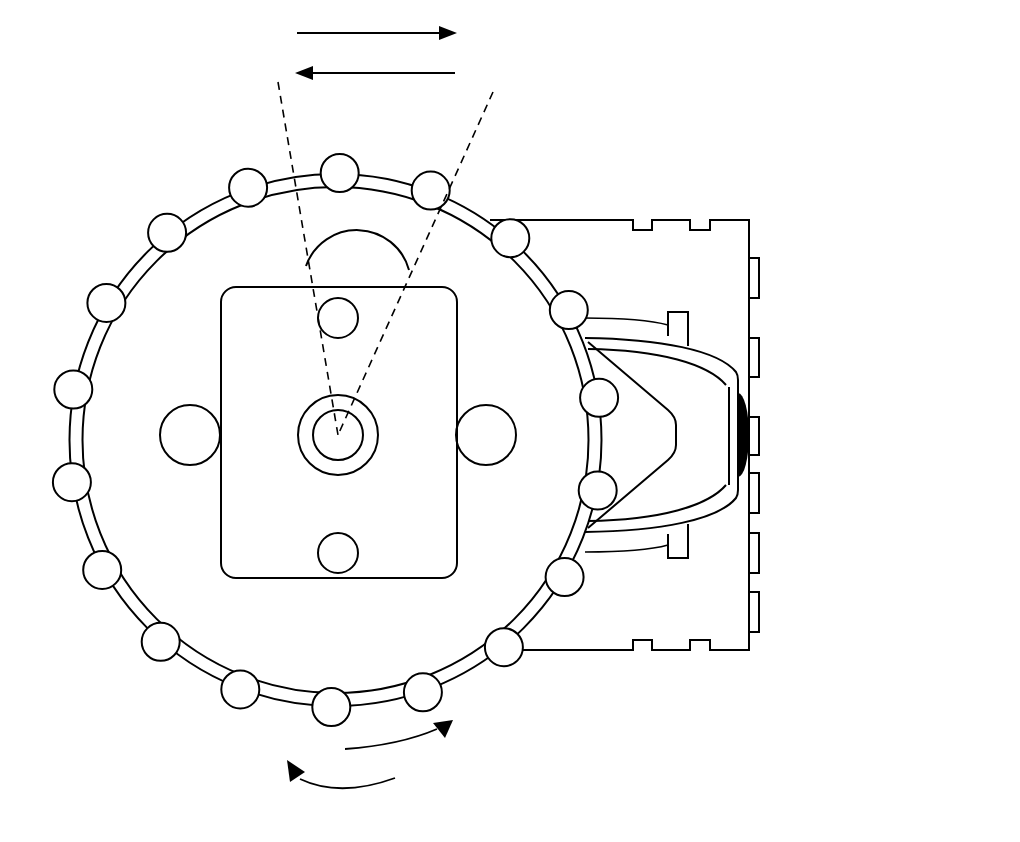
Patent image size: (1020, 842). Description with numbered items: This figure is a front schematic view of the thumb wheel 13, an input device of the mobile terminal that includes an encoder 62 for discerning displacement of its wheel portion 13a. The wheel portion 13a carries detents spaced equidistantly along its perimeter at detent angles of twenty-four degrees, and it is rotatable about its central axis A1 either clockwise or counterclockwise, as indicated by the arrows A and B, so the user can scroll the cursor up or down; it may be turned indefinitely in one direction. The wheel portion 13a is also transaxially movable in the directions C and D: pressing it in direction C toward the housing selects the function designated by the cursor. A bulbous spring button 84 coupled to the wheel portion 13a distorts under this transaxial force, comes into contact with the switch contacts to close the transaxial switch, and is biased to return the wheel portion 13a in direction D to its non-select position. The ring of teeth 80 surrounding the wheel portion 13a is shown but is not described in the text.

The thumb wheel 13 is at (598, 170).
The wheel portion 13a is at (182, 184).
The detent ring with teeth 80 is at (463, 172).
The encoder 62 is at (628, 266).
The bulbous spring button 84 is at (690, 348).
The central axis A1 is at (335, 430).